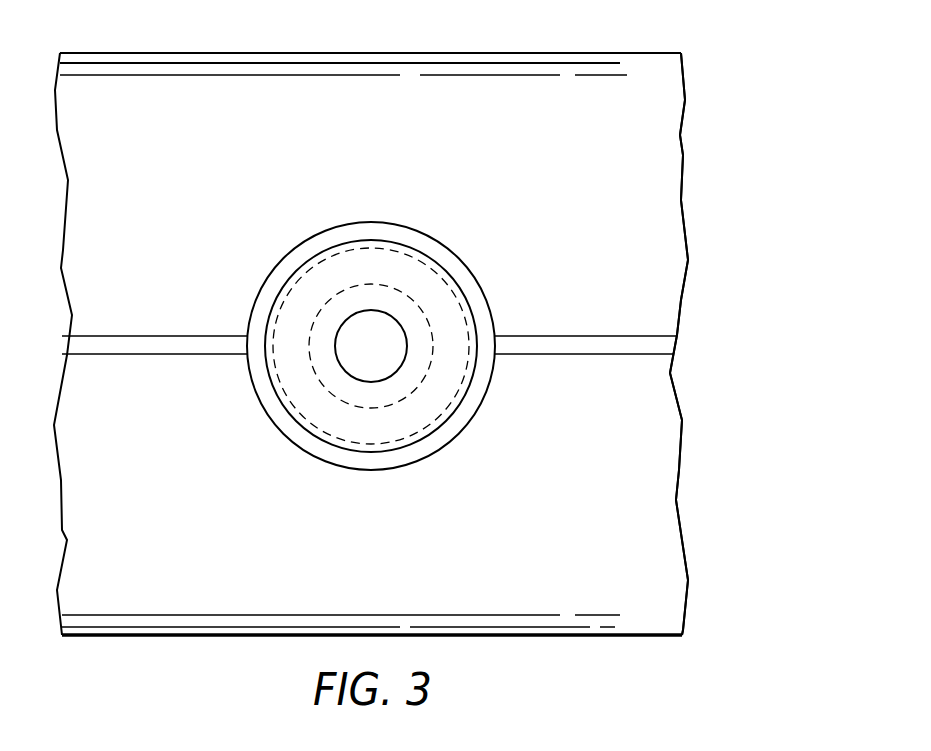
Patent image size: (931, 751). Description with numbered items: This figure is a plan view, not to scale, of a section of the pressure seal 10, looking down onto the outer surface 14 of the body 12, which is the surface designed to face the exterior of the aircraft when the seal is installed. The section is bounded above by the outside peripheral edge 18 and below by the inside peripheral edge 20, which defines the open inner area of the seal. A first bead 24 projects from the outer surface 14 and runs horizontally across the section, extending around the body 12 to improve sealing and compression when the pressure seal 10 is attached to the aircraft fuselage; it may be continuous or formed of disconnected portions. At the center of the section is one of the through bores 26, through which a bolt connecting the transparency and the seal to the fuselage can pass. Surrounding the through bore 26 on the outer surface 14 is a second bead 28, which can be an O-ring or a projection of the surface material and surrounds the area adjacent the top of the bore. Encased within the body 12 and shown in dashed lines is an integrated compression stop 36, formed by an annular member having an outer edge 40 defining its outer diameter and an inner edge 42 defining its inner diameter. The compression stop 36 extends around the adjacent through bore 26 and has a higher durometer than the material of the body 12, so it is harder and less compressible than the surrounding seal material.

The pressure seal 10 is at (712, 119).
The body 12 is at (657, 203).
The outer surface 14 is at (123, 102).
The outside peripheral edge 18 is at (506, 48).
The inside peripheral edge 20 is at (513, 641).
The first bead 24 is at (166, 357).
The through bore 26 is at (378, 340).
The second bead 28 is at (435, 439).
The compression stop 36 is at (322, 249).
The outer edge 40 is at (414, 244).
The inner edge 42 is at (407, 366).